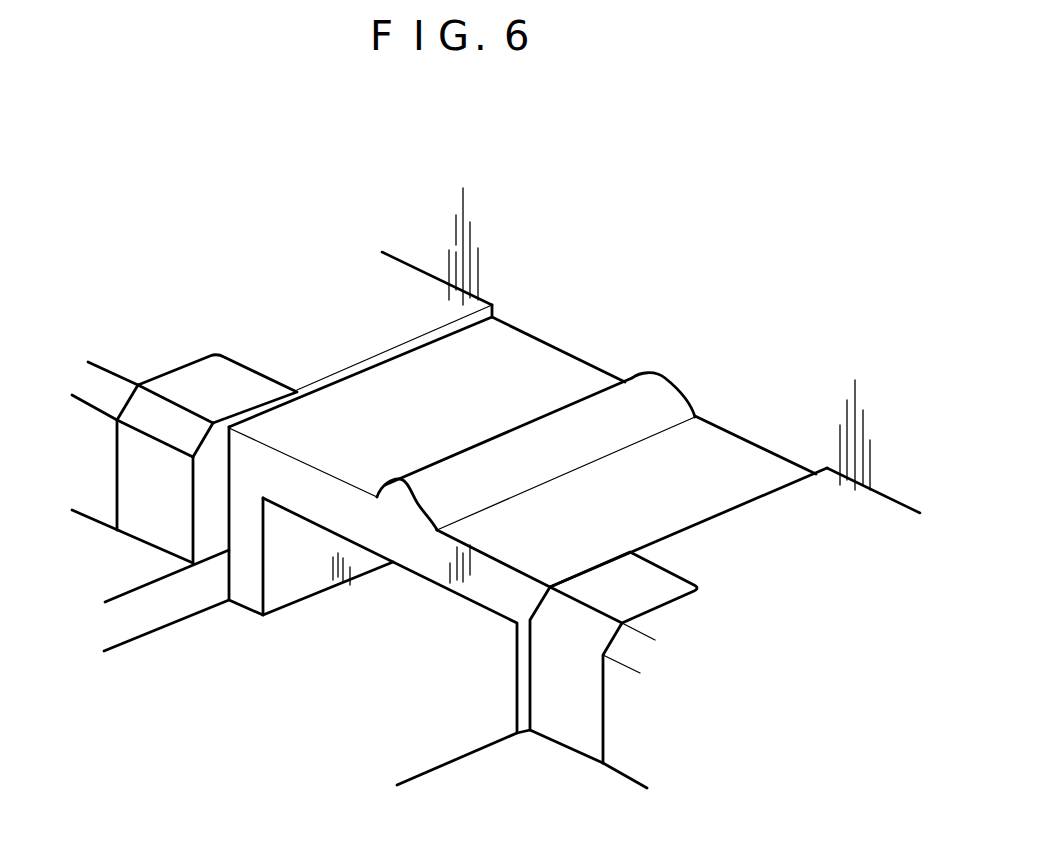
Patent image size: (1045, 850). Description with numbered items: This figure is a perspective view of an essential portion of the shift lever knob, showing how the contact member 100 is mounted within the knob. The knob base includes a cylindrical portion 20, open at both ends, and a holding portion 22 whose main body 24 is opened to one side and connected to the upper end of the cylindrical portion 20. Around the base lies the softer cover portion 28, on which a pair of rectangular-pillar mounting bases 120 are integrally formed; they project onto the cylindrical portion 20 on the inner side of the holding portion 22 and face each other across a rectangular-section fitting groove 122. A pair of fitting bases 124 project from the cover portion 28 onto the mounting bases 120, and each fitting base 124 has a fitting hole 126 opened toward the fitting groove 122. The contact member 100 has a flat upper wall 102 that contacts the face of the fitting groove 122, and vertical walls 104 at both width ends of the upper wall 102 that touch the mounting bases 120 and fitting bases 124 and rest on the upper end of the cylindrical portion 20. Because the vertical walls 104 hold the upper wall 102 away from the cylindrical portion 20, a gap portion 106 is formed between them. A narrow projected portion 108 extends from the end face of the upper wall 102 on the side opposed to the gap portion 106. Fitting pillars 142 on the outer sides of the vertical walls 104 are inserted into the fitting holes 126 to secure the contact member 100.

The cylindrical portion 20 is at (277, 735).
The holding portion 22 is at (659, 339).
The main body 24 is at (673, 297).
The cover portion 28 is at (420, 281).
The contact member 100 is at (562, 338).
The upper wall 102 is at (728, 448).
The vertical wall 104 is at (308, 580).
The gap portion 106 is at (422, 633).
The projected portion 108 is at (487, 458).
The mounting base 120 is at (77, 525).
The fitting groove 122 is at (133, 596).
The fitting base 124 is at (345, 347).
The fitting hole 126 is at (197, 370).
The fitting pillar 142 is at (130, 447).